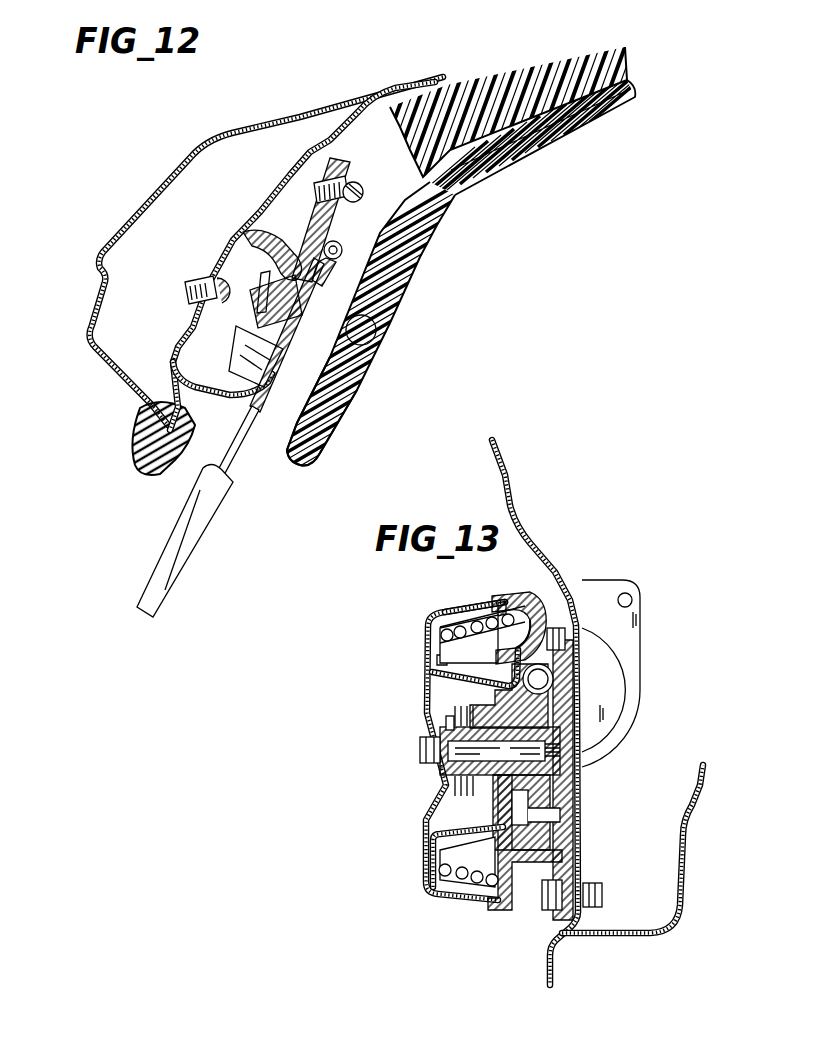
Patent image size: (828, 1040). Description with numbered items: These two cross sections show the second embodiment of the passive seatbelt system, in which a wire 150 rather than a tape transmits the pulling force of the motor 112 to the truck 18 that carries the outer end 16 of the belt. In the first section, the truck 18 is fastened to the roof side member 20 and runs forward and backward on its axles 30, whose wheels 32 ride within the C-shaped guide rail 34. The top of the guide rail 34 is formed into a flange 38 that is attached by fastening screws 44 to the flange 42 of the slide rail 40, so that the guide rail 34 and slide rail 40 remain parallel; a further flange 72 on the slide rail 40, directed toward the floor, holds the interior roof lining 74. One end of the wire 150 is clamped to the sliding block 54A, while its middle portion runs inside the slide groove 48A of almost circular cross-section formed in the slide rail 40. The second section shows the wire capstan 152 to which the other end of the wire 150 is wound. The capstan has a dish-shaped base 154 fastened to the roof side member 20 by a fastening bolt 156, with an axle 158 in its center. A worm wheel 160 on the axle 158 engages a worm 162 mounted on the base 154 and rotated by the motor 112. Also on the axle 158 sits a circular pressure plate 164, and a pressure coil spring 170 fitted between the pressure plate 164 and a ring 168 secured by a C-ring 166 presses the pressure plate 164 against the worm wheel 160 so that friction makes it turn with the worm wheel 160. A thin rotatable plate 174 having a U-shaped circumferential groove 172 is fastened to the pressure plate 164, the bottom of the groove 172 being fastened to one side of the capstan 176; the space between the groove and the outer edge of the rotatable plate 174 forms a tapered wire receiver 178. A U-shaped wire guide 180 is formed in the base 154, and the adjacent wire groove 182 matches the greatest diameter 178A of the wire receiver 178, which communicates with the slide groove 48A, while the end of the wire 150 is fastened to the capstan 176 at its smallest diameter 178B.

In FIG. 12, the outer end 16 is at (205, 533).
In FIG. 12, the truck 18 is at (250, 452).
In FIG. 12, the roof side member 20 is at (257, 220).
In FIG. 12, the axles 30 is at (262, 280).
In FIG. 12, the wheels 32 is at (262, 388).
In FIG. 12, the guide rail 34 is at (215, 396).
In FIG. 12, the flange 38 is at (297, 244).
In FIG. 12, the slide rail 40 is at (338, 262).
In FIG. 12, the flange 42 is at (345, 184).
In FIG. 12, the fastening screws 44 is at (363, 192).
In FIG. 12, the slide groove 48A is at (344, 251).
In FIG. 12, the sliding block 54A is at (374, 322).
In FIG. 12, the flange 72 is at (345, 362).
In FIG. 12, the interior roof lining 74 is at (520, 150).
In FIG. 12, the wire 150 is at (396, 274).
In FIG. 13, the wire 150 is at (438, 634).
In FIG. 13, the motor 112 is at (612, 692).
In FIG. 13, the wire capstan 152 is at (413, 606).
In FIG. 13, the dish-shaped base 154 is at (576, 792).
In FIG. 13, the fastening bolt 156 is at (552, 640).
In FIG. 13, the axle 158 is at (480, 790).
In FIG. 13, the worm wheel 160 is at (524, 808).
In FIG. 13, the worm 162 is at (555, 690).
In FIG. 13, the circular pressure plate 164 is at (495, 712).
In FIG. 13, the C-ring 166 is at (452, 782).
In FIG. 13, the ring 168 is at (455, 728).
In FIG. 13, the pressure coil spring 170 is at (452, 714).
In FIG. 13, the circumferential groove 172 is at (445, 688).
In FIG. 13, the rotatable plate 174 is at (462, 838).
In FIG. 13, the capstan 176 is at (469, 643).
In FIG. 13, the wire receiver 178 is at (463, 614).
In FIG. 13, the greatest diameter 178A is at (500, 612).
In FIG. 13, the smallest diameter 178B is at (440, 660).
In FIG. 13, the wire guide 180 is at (524, 602).
In FIG. 13, the wire groove 182 is at (542, 620).